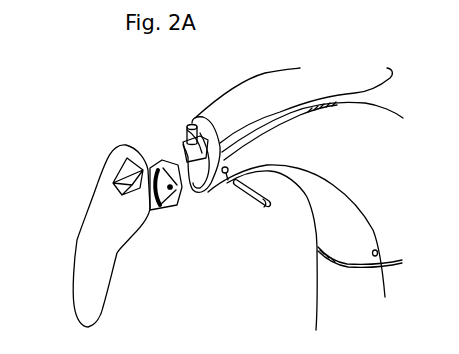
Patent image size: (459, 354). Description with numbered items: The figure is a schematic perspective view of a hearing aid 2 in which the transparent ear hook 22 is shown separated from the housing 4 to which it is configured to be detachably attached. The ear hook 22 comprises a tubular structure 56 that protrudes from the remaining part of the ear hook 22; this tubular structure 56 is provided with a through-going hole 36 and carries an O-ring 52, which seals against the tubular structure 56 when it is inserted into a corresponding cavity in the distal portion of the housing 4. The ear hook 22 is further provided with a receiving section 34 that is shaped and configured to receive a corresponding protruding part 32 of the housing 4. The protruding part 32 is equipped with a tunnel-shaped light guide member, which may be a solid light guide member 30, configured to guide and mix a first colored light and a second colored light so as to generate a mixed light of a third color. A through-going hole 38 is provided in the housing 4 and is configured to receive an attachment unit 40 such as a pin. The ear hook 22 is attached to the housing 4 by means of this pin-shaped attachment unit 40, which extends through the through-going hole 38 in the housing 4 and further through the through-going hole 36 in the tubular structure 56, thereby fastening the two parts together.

The hearing aid 2 is at (50, 163).
The housing 4 is at (317, 280).
The ear hook 22 is at (122, 247).
The solid light guide member 30 is at (191, 133).
The protruding part 32 is at (183, 144).
The receiving section 34 is at (117, 163).
The through-going hole 36 is at (170, 165).
The through-going hole 38 is at (223, 176).
The attachment unit 40 is at (257, 207).
The O-ring 52 is at (140, 214).
The tubular structure 56 is at (177, 198).